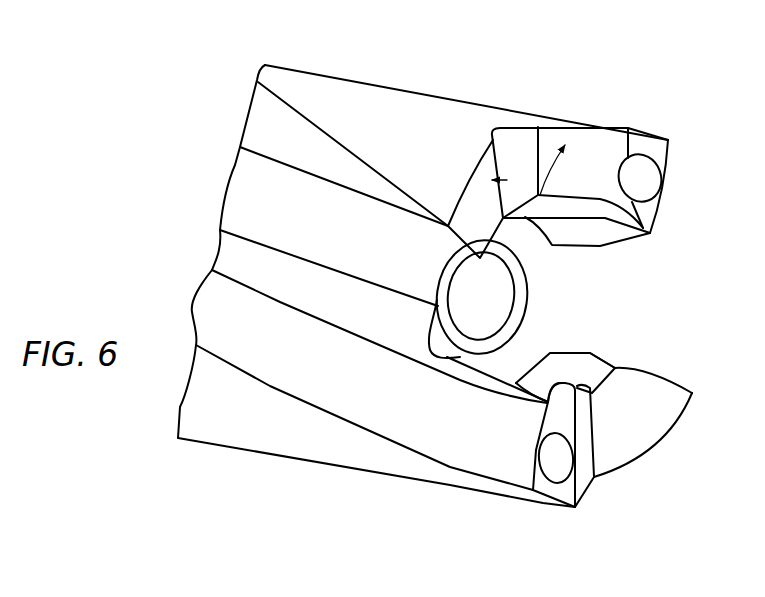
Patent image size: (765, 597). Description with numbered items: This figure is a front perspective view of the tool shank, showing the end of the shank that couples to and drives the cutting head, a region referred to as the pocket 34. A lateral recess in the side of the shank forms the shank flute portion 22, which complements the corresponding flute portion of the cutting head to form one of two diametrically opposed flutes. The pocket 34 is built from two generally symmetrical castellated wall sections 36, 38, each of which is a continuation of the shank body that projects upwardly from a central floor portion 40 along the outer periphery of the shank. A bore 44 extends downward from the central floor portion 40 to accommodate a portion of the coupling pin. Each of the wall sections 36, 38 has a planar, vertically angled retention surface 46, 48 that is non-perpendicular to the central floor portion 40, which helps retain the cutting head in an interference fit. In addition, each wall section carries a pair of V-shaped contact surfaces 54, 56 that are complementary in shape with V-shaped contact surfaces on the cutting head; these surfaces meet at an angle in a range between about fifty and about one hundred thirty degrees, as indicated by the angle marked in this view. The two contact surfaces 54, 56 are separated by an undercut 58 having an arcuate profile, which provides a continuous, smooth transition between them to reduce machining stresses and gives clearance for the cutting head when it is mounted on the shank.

The shank flute portion 22 is at (254, 203).
The pocket 34 is at (634, 307).
The castellated wall section 36 is at (571, 275).
The castellated wall section 38 is at (512, 514).
The central floor portion 40 is at (530, 238).
The bore 44 is at (493, 288).
The vertically angled retention surface 46 is at (605, 213).
The vertically angled retention surface 48 is at (560, 367).
The V-shaped contact surface 54 is at (462, 218).
The V-shaped contact surface 56 is at (598, 147).
The undercut 58 is at (519, 145).